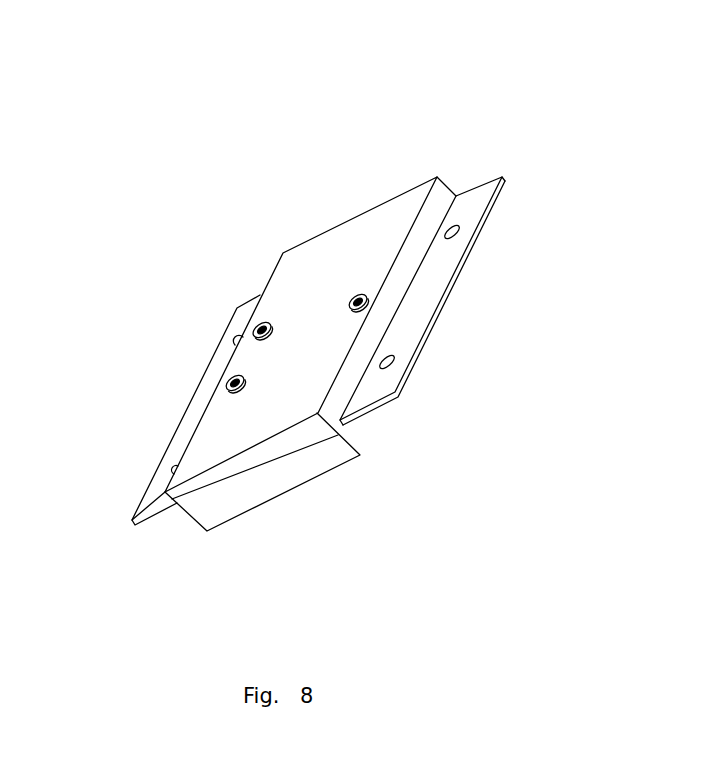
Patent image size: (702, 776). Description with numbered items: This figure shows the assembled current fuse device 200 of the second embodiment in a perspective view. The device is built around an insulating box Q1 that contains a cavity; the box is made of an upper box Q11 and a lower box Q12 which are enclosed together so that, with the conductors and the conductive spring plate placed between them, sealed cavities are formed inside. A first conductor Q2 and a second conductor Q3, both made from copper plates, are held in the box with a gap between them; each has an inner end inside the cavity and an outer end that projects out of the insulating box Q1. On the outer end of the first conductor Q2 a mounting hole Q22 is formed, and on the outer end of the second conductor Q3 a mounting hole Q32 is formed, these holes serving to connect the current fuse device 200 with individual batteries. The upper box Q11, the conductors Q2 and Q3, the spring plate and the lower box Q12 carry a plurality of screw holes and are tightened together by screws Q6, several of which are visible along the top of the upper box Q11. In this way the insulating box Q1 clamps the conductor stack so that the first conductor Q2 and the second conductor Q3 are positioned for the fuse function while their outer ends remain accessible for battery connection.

The current fuse device 200 is at (137, 102).
The insulating box Q1 is at (316, 217).
The upper box Q11 is at (397, 218).
The lower box Q12 is at (273, 477).
The first conductor Q2 is at (197, 408).
The mounting hole Q22 is at (171, 473).
The second conductor Q3 is at (437, 307).
The mounting hole Q32 is at (455, 227).
The screws Q6 is at (256, 328).